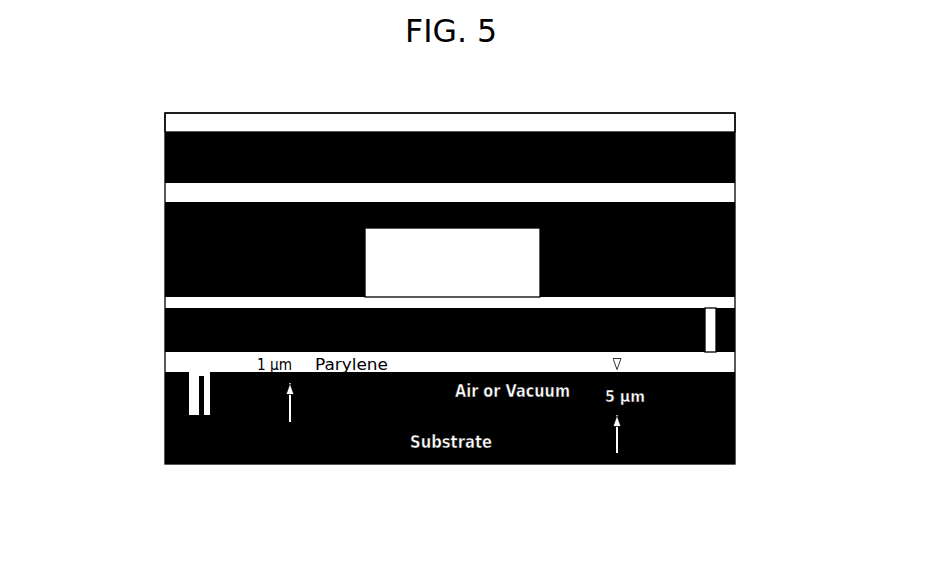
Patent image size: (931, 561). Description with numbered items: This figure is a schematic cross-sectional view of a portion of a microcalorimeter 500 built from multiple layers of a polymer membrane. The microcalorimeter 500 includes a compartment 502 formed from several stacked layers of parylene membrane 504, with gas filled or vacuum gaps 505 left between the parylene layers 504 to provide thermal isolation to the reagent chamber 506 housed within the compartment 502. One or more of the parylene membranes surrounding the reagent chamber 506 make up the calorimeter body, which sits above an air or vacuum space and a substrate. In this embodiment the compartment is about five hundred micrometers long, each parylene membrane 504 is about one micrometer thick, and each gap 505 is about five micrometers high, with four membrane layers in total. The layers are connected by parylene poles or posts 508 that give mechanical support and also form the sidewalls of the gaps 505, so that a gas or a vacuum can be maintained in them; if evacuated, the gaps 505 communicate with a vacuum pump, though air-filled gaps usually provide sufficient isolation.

The microcalorimeter 500 is at (142, 85).
The compartment 502 is at (665, 113).
The parylene membrane 504 is at (725, 127).
The gas filled or vacuum gaps 505 is at (292, 158).
The reagent chamber 506 is at (400, 245).
The parylene poles or posts 508 is at (708, 320).